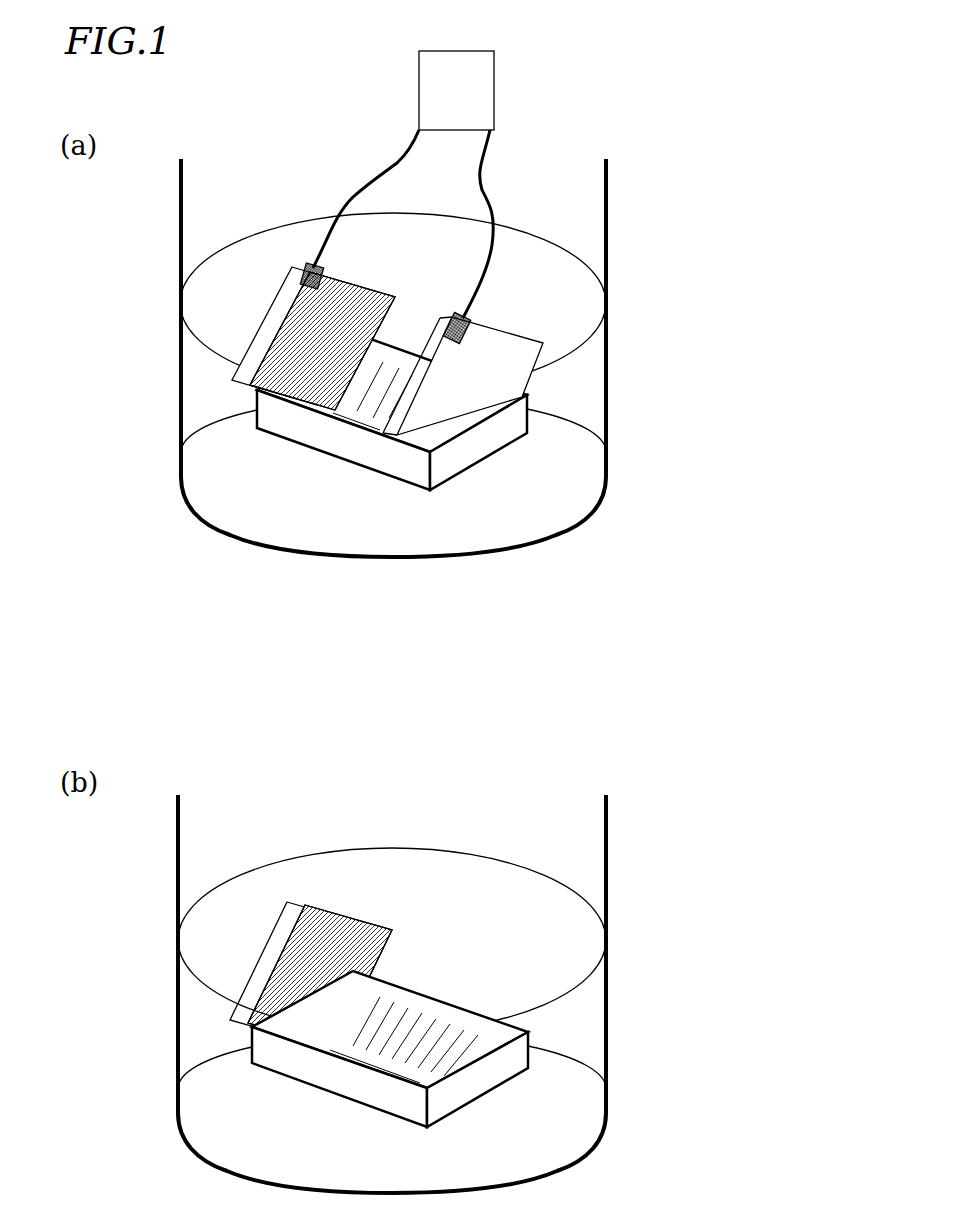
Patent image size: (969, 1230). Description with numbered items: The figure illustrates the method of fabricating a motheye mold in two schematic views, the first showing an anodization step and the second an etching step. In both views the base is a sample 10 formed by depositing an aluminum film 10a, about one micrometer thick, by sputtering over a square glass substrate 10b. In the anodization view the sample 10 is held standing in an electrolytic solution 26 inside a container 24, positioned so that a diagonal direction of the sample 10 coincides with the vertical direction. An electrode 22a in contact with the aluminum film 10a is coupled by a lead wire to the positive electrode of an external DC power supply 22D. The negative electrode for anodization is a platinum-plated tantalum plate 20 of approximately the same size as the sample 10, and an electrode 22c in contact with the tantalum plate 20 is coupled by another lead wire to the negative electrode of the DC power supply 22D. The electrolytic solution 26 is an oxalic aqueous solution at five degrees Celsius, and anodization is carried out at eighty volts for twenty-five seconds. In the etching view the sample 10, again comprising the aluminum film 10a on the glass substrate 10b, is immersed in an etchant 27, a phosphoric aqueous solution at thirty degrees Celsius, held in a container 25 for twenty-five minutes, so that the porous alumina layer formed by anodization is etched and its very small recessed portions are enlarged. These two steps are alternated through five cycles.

The sample 10 is at (312, 566).
The aluminum film 10a is at (347, 287).
The glass substrate 10b is at (287, 280).
The platinum-plated tantalum plate 20 is at (510, 358).
The electrode 22a is at (212, 315).
The electrode 22c is at (470, 320).
The external DC power supply 22D is at (494, 91).
The container 24 is at (608, 213).
The container 25 is at (607, 850).
The electrolytic solution 26 is at (558, 262).
The etchant 27 is at (557, 900).